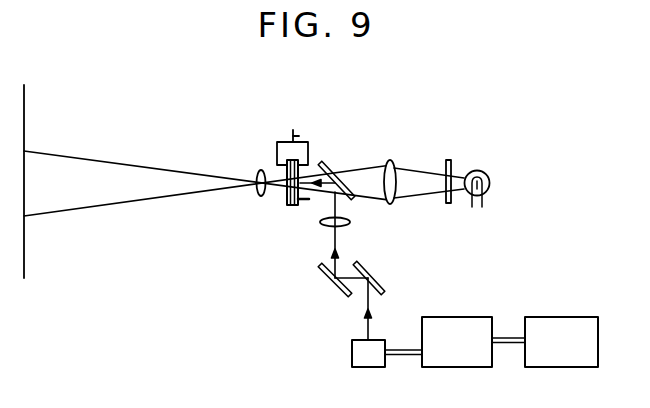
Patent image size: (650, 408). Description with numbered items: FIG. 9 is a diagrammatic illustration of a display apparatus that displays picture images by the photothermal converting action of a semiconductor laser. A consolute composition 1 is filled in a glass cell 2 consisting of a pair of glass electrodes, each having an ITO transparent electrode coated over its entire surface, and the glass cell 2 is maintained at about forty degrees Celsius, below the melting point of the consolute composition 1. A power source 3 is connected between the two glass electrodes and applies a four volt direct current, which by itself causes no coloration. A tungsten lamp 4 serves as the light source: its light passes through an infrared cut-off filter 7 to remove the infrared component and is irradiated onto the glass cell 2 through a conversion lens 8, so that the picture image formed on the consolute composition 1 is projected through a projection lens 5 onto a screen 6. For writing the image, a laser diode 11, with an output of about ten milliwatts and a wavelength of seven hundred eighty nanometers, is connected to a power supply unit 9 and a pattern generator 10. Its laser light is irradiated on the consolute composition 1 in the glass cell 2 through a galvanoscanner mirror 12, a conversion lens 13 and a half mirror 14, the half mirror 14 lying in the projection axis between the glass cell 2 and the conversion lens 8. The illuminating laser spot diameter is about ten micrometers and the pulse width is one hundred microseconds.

The consolute composition 1 is at (287, 199).
The glass cell 2 is at (309, 199).
The power source 3 is at (293, 130).
The tungsten lamp 4 is at (489, 176).
The projection lens 5 is at (256, 172).
The screen 6 is at (24, 262).
The infrared cut-off filter 7 is at (451, 162).
The conversion lens 8 is at (397, 170).
The power supply unit 9 is at (457, 323).
The pattern generator 10 is at (559, 323).
The laser diode 11 is at (352, 352).
The galvanoscanner mirror 12 is at (383, 282).
The conversion lens 13 is at (348, 224).
The half mirror 14 is at (327, 166).